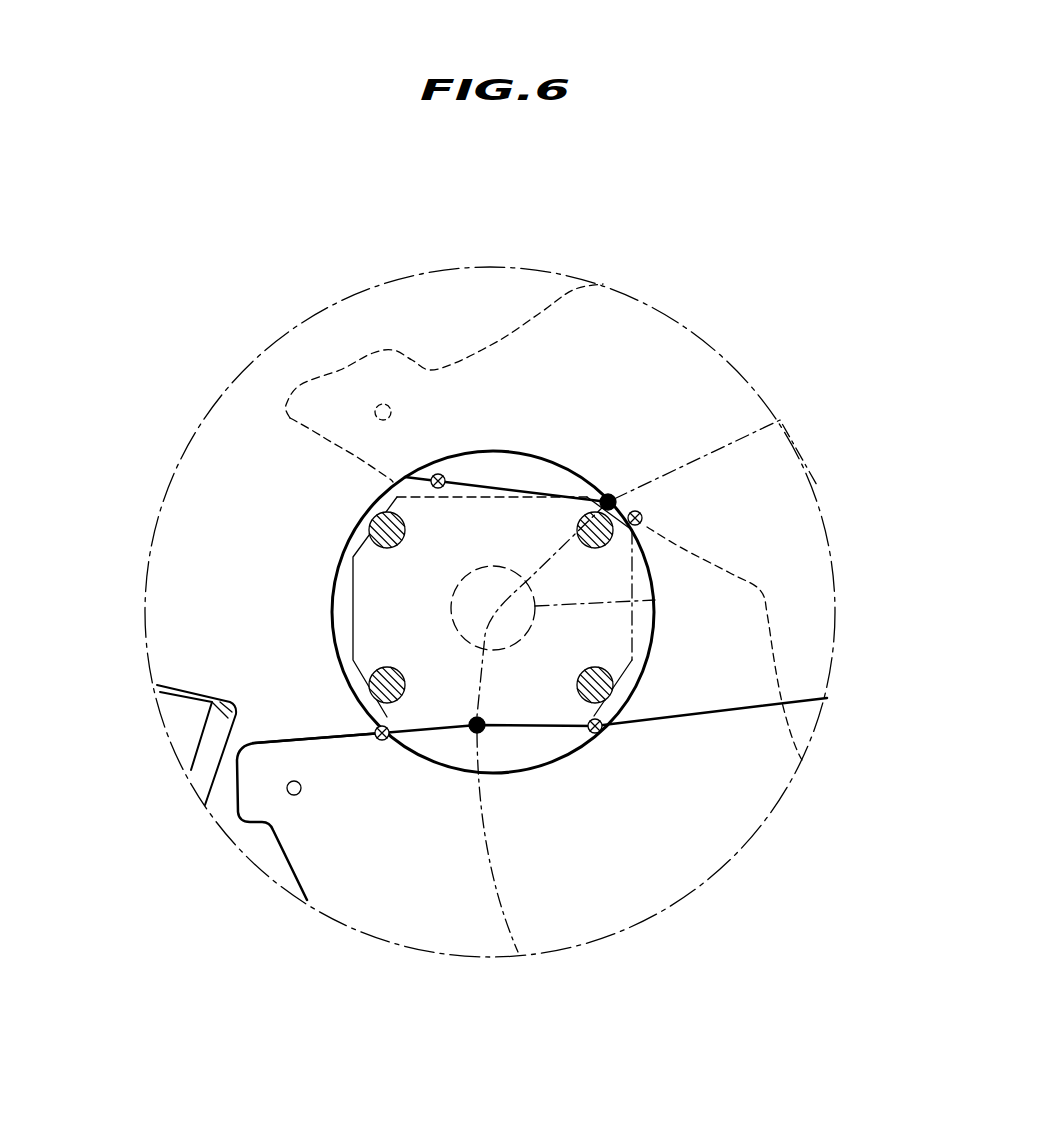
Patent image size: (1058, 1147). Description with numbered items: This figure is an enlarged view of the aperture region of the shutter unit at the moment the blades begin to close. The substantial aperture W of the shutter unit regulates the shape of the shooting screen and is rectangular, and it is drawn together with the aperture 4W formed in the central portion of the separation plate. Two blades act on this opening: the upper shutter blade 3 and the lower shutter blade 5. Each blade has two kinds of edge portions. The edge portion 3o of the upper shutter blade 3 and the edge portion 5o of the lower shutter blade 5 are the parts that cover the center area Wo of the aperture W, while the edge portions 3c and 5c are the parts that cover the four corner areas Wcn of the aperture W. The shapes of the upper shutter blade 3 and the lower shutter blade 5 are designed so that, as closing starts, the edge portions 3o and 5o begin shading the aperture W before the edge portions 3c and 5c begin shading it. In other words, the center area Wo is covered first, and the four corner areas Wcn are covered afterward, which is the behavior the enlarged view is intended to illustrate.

The upper shutter blade 3 is at (643, 333).
The edge portion of the upper shutter blade 3c is at (438, 478).
The edge portion of the upper shutter blade 3o is at (612, 498).
The aperture of the separation plate 4W is at (343, 615).
The lower shutter blade 5 is at (595, 902).
The edge portion of the lower shutter blade 5c is at (597, 733).
The edge portion of the lower shutter blade 5o is at (483, 732).
The aperture W is at (365, 590).
The corner areas Wcn is at (380, 522).
The center area Wo is at (655, 601).